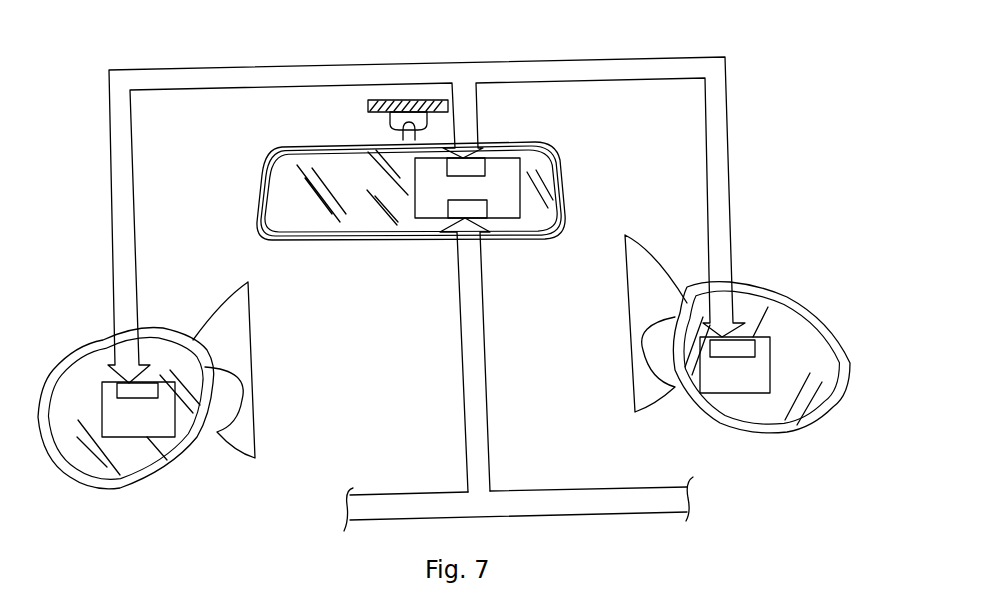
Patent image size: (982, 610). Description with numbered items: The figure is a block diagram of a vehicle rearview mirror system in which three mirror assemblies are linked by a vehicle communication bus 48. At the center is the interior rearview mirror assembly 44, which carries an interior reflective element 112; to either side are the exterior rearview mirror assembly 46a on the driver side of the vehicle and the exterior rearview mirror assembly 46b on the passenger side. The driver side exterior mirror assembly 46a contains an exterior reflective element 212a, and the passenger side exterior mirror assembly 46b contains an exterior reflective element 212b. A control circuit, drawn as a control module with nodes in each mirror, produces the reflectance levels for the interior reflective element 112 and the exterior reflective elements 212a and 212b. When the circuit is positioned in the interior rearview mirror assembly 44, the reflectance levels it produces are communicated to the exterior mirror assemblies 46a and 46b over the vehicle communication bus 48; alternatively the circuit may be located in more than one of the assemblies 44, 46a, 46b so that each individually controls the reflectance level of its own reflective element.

The interior rearview mirror assembly 44 is at (430, 189).
The exterior rearview mirror assembly 46a is at (163, 400).
The exterior rearview mirror assembly 46b is at (754, 357).
The vehicle communication bus 48 is at (563, 83).
The interior reflective element 112 is at (329, 152).
The exterior reflective element 212a is at (185, 450).
The exterior reflective element 212b is at (705, 398).